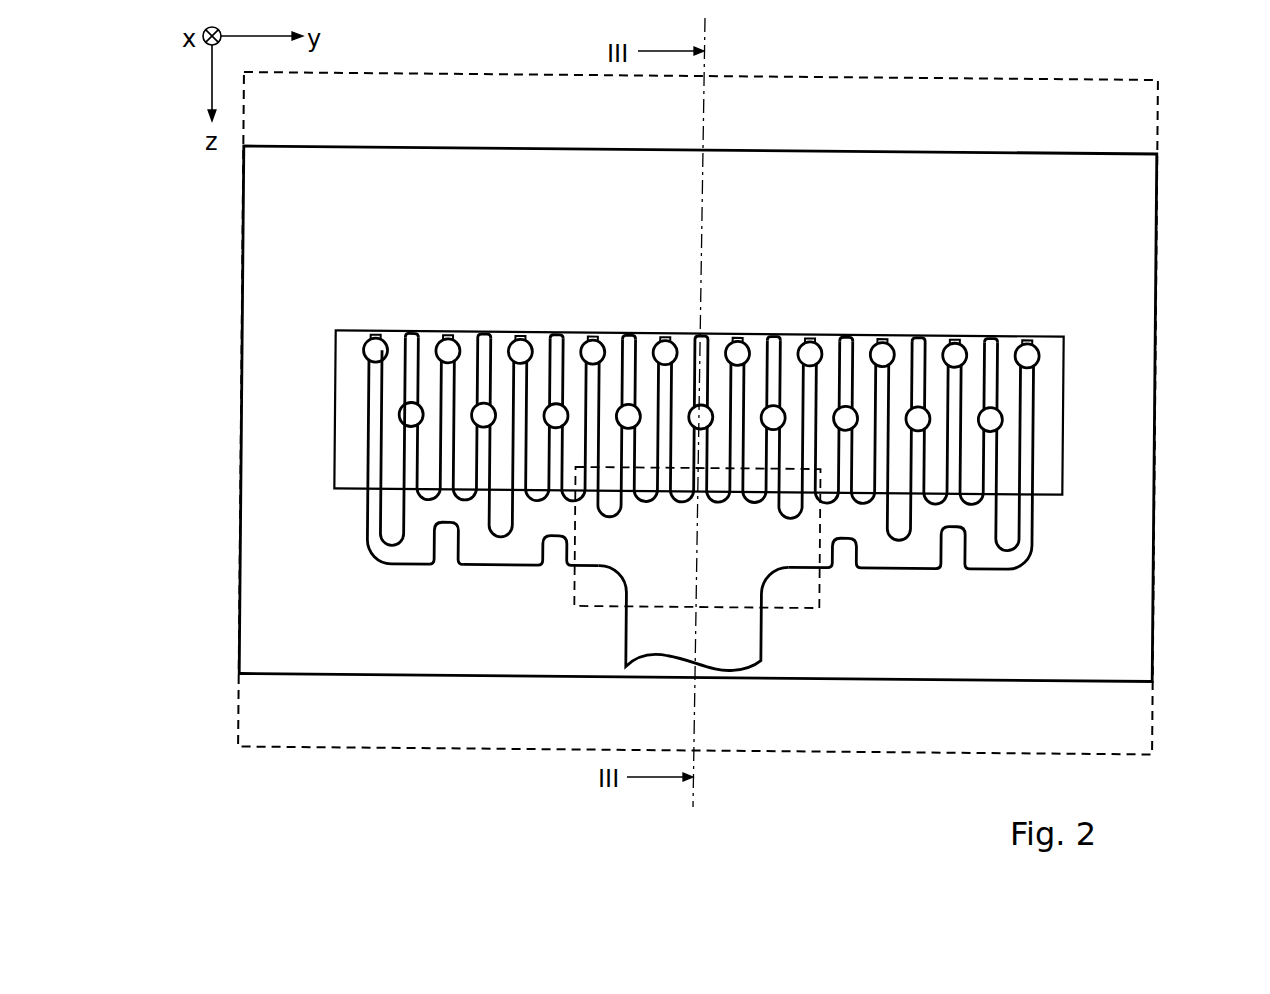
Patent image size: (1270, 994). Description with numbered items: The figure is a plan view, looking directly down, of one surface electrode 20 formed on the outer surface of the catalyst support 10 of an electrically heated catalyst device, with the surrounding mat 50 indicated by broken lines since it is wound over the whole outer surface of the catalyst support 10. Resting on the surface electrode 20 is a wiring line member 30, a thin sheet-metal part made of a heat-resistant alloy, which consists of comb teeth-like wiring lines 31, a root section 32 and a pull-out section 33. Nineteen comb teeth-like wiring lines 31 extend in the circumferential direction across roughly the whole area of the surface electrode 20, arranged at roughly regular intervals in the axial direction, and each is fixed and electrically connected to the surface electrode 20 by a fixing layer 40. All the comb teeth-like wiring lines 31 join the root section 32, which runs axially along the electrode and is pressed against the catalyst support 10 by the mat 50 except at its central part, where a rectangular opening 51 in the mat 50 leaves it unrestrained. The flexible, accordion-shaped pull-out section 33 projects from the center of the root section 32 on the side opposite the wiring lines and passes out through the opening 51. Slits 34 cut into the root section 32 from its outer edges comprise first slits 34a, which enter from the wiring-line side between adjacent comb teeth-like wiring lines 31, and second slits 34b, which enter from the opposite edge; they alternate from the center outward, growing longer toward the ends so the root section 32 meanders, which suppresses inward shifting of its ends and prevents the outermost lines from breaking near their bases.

The catalyst support 10 is at (1154, 226).
The surface electrode 20 is at (1051, 339).
The wiring line member 30 is at (658, 475).
The comb teeth-like wiring line 31 is at (362, 337).
The root section 32 is at (553, 505).
The pull-out section 33 is at (611, 574).
The slit 34 is at (445, 493).
The first slit 34a is at (390, 545).
The second slit 34b is at (444, 551).
The fixing layer 40 is at (434, 348).
The mat 50 is at (1155, 109).
The opening 51 is at (578, 536).